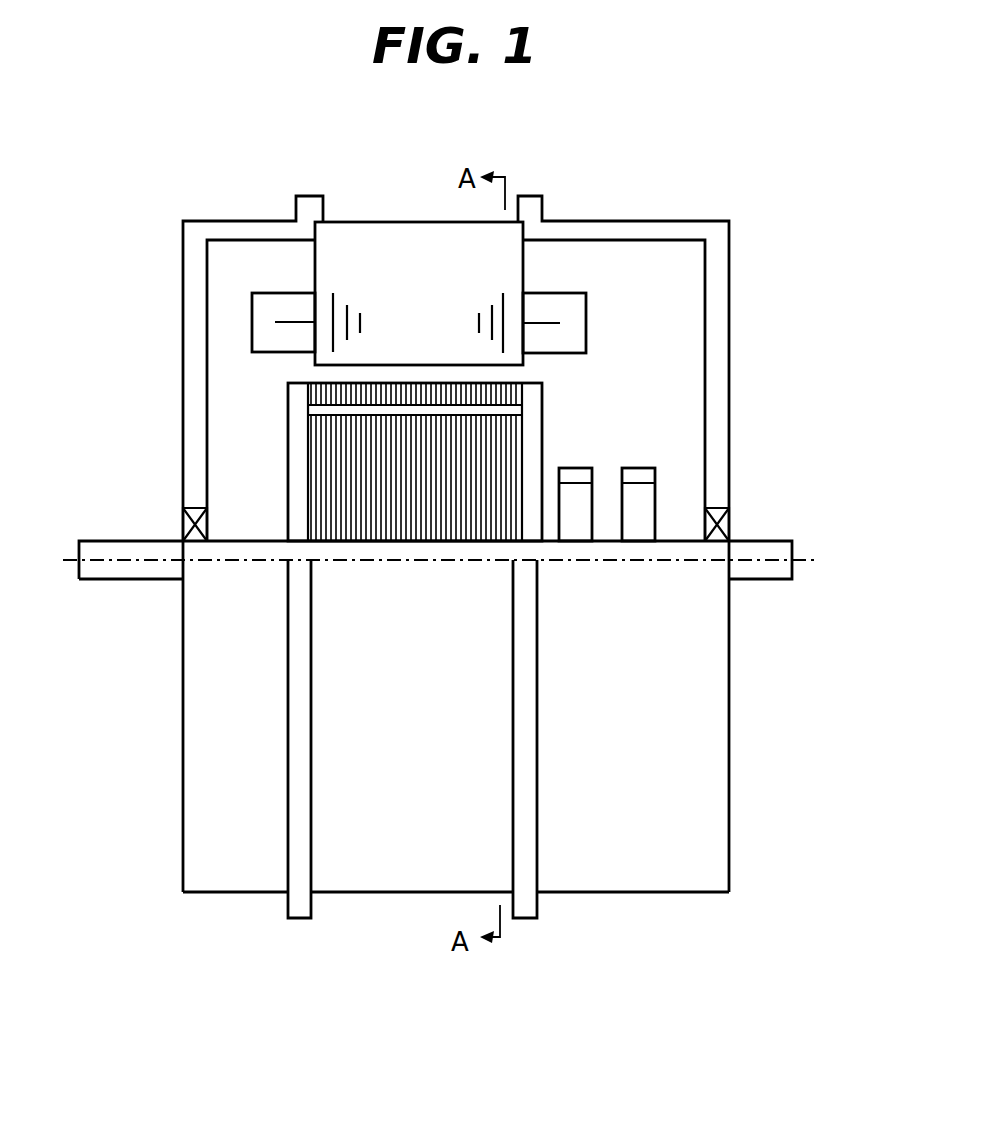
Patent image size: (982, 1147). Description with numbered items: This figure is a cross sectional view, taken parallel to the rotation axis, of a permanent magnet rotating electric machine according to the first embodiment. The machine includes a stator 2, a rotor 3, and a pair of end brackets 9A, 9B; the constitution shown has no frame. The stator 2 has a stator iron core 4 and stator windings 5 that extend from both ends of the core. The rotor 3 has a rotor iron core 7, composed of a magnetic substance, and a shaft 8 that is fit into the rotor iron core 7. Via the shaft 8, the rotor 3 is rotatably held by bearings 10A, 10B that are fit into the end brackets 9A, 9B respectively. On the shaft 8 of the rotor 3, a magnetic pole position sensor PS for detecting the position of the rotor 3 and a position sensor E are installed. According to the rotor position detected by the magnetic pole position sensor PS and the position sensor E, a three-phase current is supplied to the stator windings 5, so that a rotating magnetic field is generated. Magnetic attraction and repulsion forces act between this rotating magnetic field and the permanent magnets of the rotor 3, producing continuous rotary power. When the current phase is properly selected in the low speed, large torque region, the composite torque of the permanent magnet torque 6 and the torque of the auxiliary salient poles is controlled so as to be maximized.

The stator 2 is at (451, 252).
The rotor 3 is at (408, 455).
The stator iron core 4 is at (523, 270).
The stator windings 5 is at (586, 320).
The permanent magnet torque 6 is at (510, 407).
The rotor iron core 7 is at (335, 455).
The shaft 8 is at (762, 580).
The end bracket 9A is at (193, 350).
The end bracket 9B is at (722, 375).
The bearing 10A is at (183, 518).
The bearing 10B is at (729, 518).
The position sensor E is at (578, 468).
The magnetic pole position sensor PS is at (641, 468).